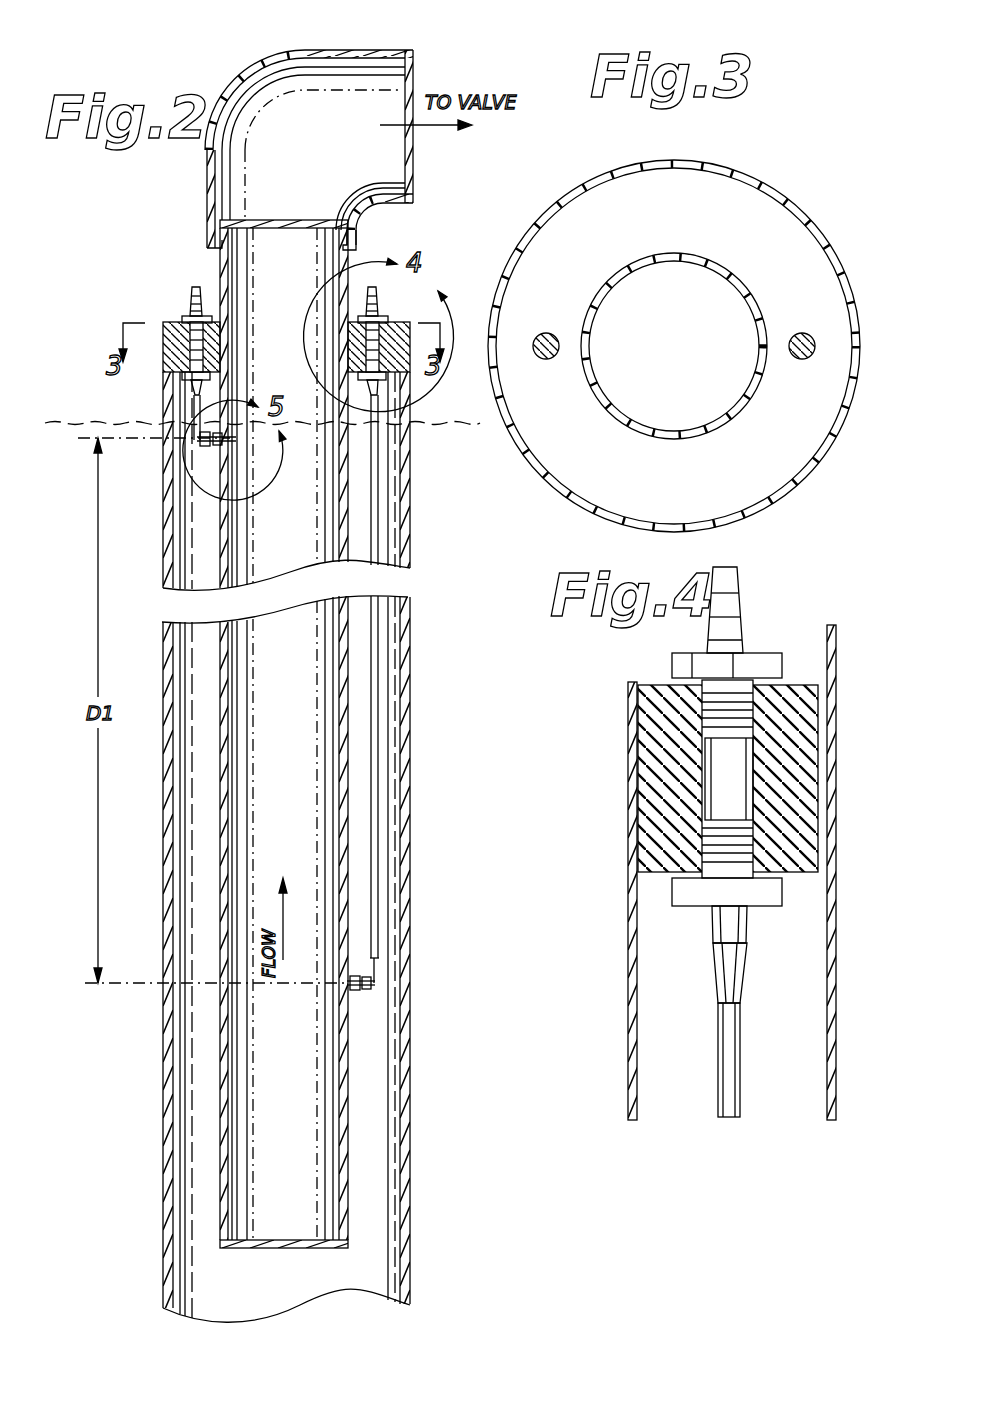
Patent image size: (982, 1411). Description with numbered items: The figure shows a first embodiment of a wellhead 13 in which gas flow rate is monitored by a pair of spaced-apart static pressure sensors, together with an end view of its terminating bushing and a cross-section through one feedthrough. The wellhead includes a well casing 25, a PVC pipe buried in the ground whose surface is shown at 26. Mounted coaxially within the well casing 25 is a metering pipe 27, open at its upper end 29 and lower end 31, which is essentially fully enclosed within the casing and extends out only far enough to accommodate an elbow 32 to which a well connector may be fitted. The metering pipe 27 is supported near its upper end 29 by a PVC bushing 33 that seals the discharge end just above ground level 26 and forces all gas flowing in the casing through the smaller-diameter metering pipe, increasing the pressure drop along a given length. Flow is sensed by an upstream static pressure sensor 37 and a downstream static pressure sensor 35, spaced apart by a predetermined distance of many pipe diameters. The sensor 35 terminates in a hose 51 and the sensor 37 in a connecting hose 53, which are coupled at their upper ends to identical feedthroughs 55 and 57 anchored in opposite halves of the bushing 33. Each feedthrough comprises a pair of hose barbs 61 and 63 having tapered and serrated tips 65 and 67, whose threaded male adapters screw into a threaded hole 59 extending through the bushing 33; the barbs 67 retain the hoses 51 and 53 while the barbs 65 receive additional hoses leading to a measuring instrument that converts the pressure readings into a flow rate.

In FIG. 2, the wellhead 13 is at (196, 70).
In FIG. 2, the well casing 25 is at (411, 670).
In FIG. 3, the well casing 25 is at (802, 212).
In FIG. 4, the well casing 25 is at (732, 872).
In FIG. 2, the ground surface 26 is at (84, 423).
In FIG. 2, the metering pipe 27 is at (348, 1082).
In FIG. 3, the metering pipe 27 is at (628, 262).
In FIG. 2, the upper end of metering pipe 29 is at (286, 220).
In FIG. 2, the lower end of metering pipe 31 is at (278, 1240).
In FIG. 2, the elbow 32 is at (317, 50).
In FIG. 2, the bushing 33 is at (176, 322).
In FIG. 3, the bushing 33 is at (688, 187).
In FIG. 4, the bushing 33 is at (808, 710).
In FIG. 2, the static pressure sensor 35 is at (235, 441).
In FIG. 2, the static pressure sensor 37 is at (341, 985).
In FIG. 2, the hose 51 is at (193, 398).
In FIG. 4, the hose 51 is at (742, 1036).
In FIG. 2, the connecting hose 53 is at (378, 498).
In FIG. 2, the feedthrough 55 is at (200, 347).
In FIG. 3, the feedthrough 55 is at (546, 360).
In FIG. 4, the feedthrough 55 is at (768, 778).
In FIG. 2, the feedthrough 57 is at (378, 335).
In FIG. 3, the feedthrough 57 is at (796, 332).
In FIG. 4, the threaded hole 59 is at (712, 790).
In FIG. 4, the hose barb 61 is at (784, 659).
In FIG. 4, the hose barb 63 is at (783, 894).
In FIG. 4, the tapered and serrated tip 65 is at (742, 592).
In FIG. 4, the tapered and serrated tip 67 is at (750, 929).